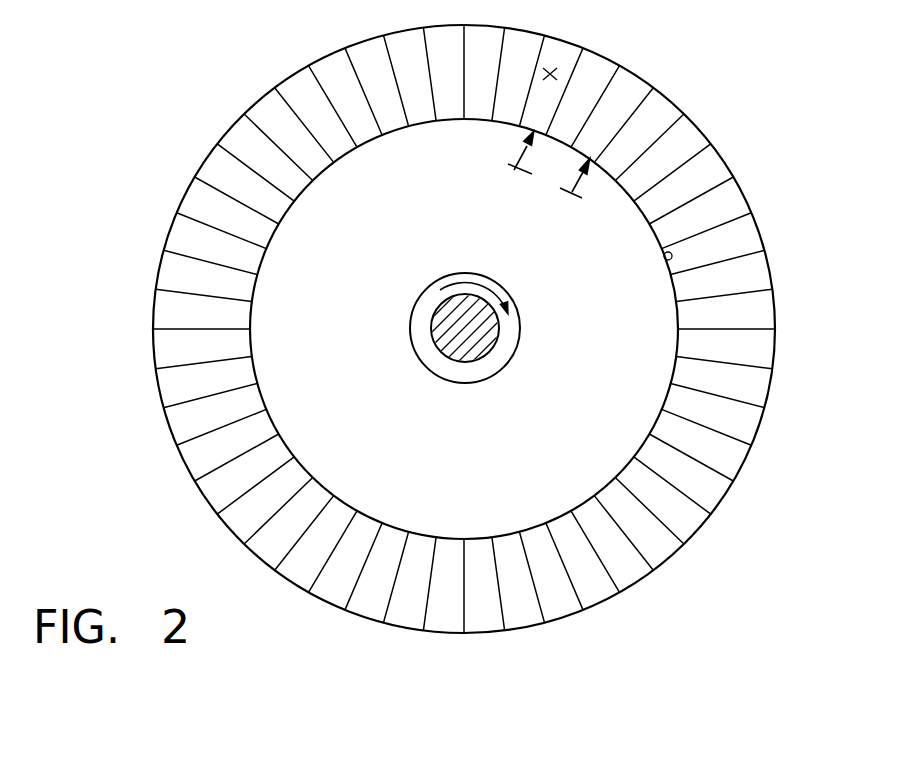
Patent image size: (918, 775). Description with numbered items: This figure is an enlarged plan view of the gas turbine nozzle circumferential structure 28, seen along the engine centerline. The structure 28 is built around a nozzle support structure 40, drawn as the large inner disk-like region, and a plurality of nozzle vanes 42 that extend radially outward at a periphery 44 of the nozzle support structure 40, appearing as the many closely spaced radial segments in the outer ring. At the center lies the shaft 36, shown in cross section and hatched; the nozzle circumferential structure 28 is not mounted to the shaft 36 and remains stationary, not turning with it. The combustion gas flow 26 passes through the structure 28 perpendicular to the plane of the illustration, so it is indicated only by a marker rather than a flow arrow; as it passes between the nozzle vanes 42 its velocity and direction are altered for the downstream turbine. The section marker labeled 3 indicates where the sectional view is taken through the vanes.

The gas turbine nozzle circumferential structure 28 is at (766, 183).
The nozzle vanes 42 is at (623, 83).
The combustion gas flow 26 is at (551, 68).
The periphery 44 is at (665, 260).
The nozzle support structure 40 is at (612, 332).
The shaft 36 is at (500, 341).
The section line 3- 3 is at (551, 170).